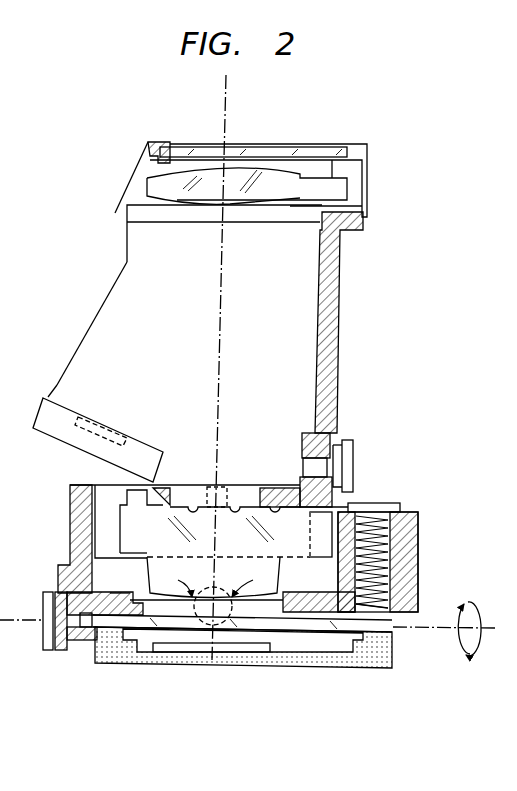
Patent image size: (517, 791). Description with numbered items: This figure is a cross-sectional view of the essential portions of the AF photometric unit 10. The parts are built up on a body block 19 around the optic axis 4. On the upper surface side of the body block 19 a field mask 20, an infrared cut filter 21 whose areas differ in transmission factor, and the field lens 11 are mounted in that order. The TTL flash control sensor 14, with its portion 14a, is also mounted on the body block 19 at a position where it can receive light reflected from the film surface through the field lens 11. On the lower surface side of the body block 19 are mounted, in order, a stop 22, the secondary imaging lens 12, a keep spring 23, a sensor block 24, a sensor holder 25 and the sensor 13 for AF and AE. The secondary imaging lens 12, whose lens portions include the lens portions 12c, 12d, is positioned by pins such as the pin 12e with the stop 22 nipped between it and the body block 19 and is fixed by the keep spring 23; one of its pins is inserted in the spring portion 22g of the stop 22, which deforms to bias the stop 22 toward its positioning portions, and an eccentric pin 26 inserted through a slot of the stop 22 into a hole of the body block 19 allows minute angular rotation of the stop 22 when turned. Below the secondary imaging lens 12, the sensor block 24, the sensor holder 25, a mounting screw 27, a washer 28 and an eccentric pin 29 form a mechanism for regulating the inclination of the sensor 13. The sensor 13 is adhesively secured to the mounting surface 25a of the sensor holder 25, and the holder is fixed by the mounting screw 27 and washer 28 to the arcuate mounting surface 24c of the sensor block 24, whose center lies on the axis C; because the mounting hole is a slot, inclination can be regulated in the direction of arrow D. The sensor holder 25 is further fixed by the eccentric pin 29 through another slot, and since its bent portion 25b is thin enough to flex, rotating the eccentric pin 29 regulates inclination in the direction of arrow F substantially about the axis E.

The optic axis 4 is at (235, 118).
The AF photometric unit 10 is at (388, 162).
The field lens 11 is at (266, 172).
The secondary imaging lens 12 is at (130, 524).
The lens portion 12c is at (263, 512).
The lens portion 12d is at (173, 510).
The pin 12e is at (225, 488).
The sensor for AF and AE 13 is at (394, 652).
The TTL flash control sensor 14 is at (44, 409).
The mirror reflecting portion 14a is at (116, 424).
The body block 19 is at (337, 290).
The field mask 20 is at (312, 145).
The infrared cut filter 21 is at (206, 147).
The stop 22 is at (344, 505).
The spring portion 22g is at (112, 492).
The keep spring 23 is at (90, 551).
The sensor block 24 is at (418, 546).
The arcuate mounting surface 24c is at (412, 563).
The sensor holder 25 is at (82, 643).
The mounting surface 25a is at (150, 637).
The bent portion 25b is at (200, 641).
The eccentric pin 26 is at (355, 457).
The mounting screw 27 is at (397, 506).
The washer 28 is at (412, 516).
The eccentric pin 29 is at (40, 627).
The axis C is at (254, 630).
The arrow D is at (478, 606).
The axis E is at (228, 652).
The arrow F is at (209, 582).